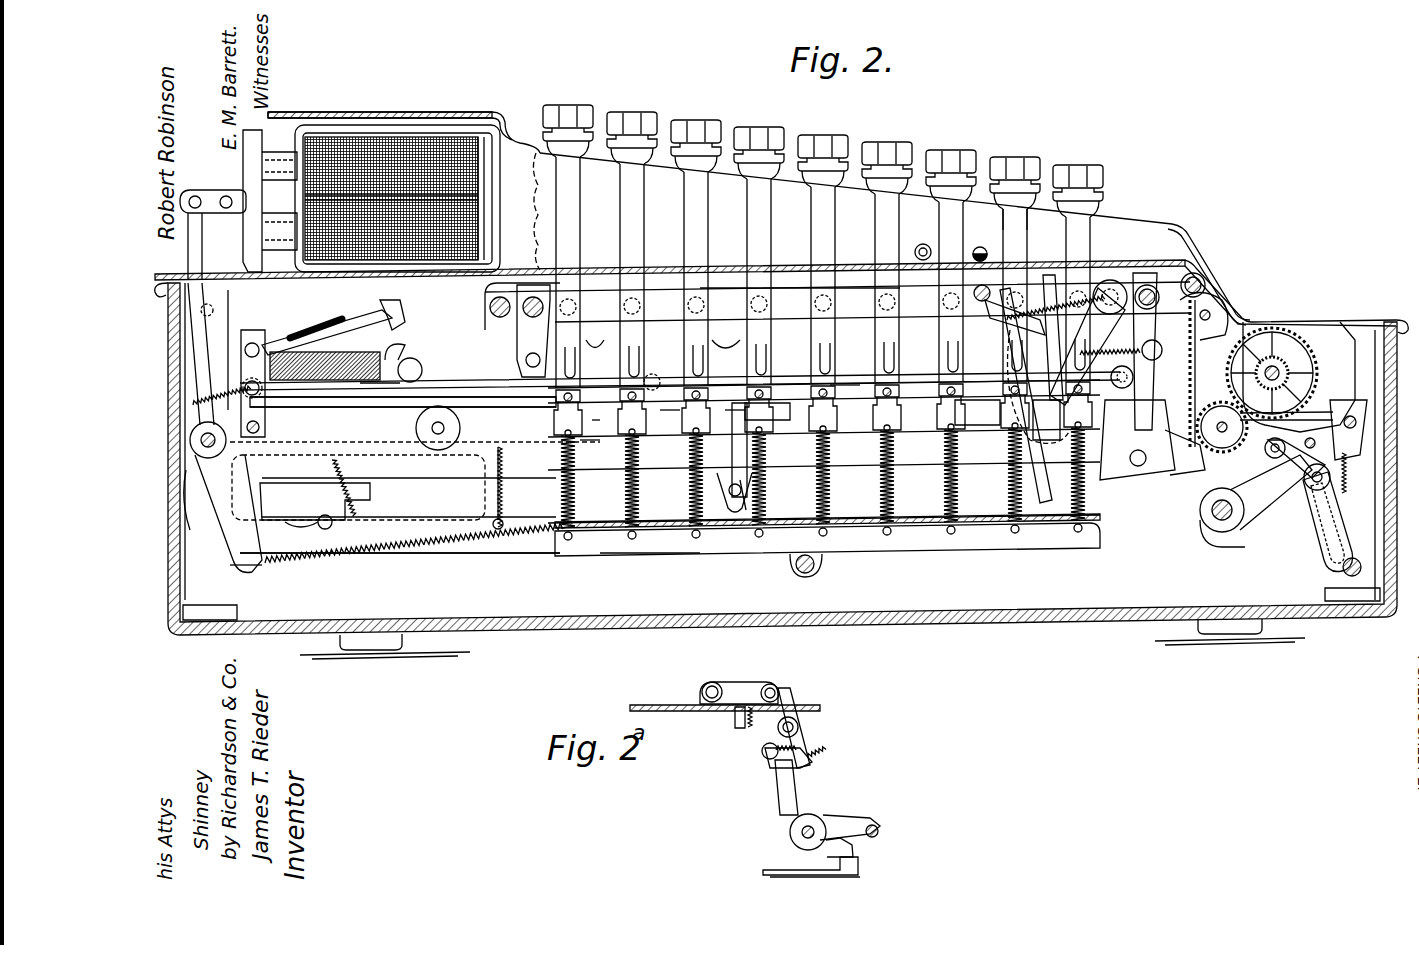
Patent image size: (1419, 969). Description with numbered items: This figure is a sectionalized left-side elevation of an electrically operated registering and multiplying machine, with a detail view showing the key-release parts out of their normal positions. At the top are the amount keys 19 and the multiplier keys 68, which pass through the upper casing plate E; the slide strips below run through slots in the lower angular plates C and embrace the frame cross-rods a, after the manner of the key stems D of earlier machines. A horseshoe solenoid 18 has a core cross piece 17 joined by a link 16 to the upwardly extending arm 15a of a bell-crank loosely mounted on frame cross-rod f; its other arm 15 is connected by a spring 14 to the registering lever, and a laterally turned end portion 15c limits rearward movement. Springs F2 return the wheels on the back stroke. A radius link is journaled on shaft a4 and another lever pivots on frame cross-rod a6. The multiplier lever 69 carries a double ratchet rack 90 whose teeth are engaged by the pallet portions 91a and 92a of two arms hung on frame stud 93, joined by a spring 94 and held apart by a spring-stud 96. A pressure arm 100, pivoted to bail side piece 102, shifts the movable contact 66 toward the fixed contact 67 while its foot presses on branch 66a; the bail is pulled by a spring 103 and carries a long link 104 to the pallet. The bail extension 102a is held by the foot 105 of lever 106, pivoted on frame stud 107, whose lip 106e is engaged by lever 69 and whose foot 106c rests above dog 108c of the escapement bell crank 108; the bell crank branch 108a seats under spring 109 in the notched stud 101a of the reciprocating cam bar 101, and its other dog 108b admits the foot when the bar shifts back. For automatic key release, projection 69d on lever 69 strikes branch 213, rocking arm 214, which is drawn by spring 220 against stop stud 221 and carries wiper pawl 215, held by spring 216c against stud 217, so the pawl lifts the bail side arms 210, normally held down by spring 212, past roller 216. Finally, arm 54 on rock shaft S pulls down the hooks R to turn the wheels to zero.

In FIG. 2, the spring 14 is at (350, 506).
In FIG. 2, the forwardly and downwardly extending arm 15 is at (288, 500).
In FIG. 2, the upwardly extending arm 15a is at (205, 222).
In FIG. 2, the laterally turned end portion 15c is at (362, 490).
In FIG. 2, the link 16 is at (228, 192).
In FIG. 2, the cross piece 17 is at (270, 114).
In FIG. 2, the horseshoe solenoid 18 is at (400, 135).
In FIG. 2, the amount keys 19 is at (705, 127).
In FIG. 2, the arm 54 is at (1280, 510).
In FIG. 2, the movable contact 66 is at (418, 365).
In FIG. 2, the rearwardly projecting branch 66a is at (395, 312).
In FIG. 2, the fixed contact 67 is at (390, 398).
In FIG. 2, the multiplier keys 68 is at (1030, 160).
In FIG. 2, the lever 69 is at (858, 470).
In FIG. 2, the upstanding projection 69d is at (1045, 442).
In FIG. 2A, the upstanding projection 69d is at (865, 870).
In FIG. 2, the double ratchet rack 90 is at (1250, 340).
In FIG. 2, the laterally turned portion 91a is at (1160, 442).
In FIG. 2, the laterally turned portion 92a is at (1125, 442).
In FIG. 2, the frame stud 93 is at (1125, 292).
In FIG. 2, the spring 94 is at (1155, 296).
In FIG. 2, the spring-stud 96 is at (1215, 400).
In FIG. 2, the pressure arm 100 is at (380, 312).
In FIG. 2, the reciprocating cam bar 101 is at (590, 380).
In FIG. 2, the stud 101a is at (645, 380).
In FIG. 2, the side piece 102 is at (240, 360).
In FIG. 2, the forward and upwardly curved extension 102a is at (330, 440).
In FIG. 2, the spring 103 is at (243, 390).
In FIG. 2, the long link 104 is at (785, 380).
In FIG. 2, the foot 105 is at (295, 432).
In FIG. 2, the lever 106 is at (460, 470).
In FIG. 2, the foot 106c is at (735, 525).
In FIG. 2, the lip 106e is at (770, 415).
In FIG. 2, the frame stud 107 is at (440, 408).
In FIG. 2, the escapement bell crank 108 is at (800, 421).
In FIG. 2, the upwardly extending branch 108a is at (655, 412).
In FIG. 2, the escapement dog 108b is at (712, 518).
In FIG. 2, the escapement dog 108c is at (745, 525).
In FIG. 2, the spring 109 is at (720, 375).
In FIG. 2, the side arms 210 is at (923, 244).
In FIG. 2A, the side arms 210 is at (718, 680).
In FIG. 2A, the spring 212 is at (740, 722).
In FIG. 2, the lower branch 213 is at (965, 442).
In FIG. 2A, the lower branch 213 is at (828, 825).
In FIG. 2, the upwardly extending arm 214 is at (950, 410).
In FIG. 2A, the upwardly extending arm 214 is at (790, 795).
In FIG. 2, the wiper pawl 215 is at (1050, 270).
In FIG. 2A, the wiper pawl 215 is at (800, 712).
In FIG. 2, the roller 216 is at (981, 247).
In FIG. 2A, the roller 216 is at (778, 688).
In FIG. 2, the spring 216c is at (973, 298).
In FIG. 2, the stud 217 is at (978, 320).
In FIG. 2A, the stud 217 is at (812, 770).
In FIG. 2, the spring 220 is at (1085, 305).
In FIG. 2A, the spring 220 is at (835, 753).
In FIG. 2A, the stop stud 221 is at (880, 830).
In FIG. 2, the frame cross-rods a is at (625, 405).
In FIG. 2, the shaft a4 is at (1193, 278).
In FIG. 2, the frame cross-rod a6 is at (545, 295).
In FIG. 2, the frame cross-rod f is at (205, 490).
In FIG. 2, the key stems D is at (585, 512).
In FIG. 2, the lower angular plates C is at (655, 552).
In FIG. 2, the upper casing plate E is at (795, 268).
In FIG. 2, the springs F2 is at (318, 560).
In FIG. 2, the hooks R is at (1340, 330).
In FIG. 2, the rock shaft S is at (1220, 533).